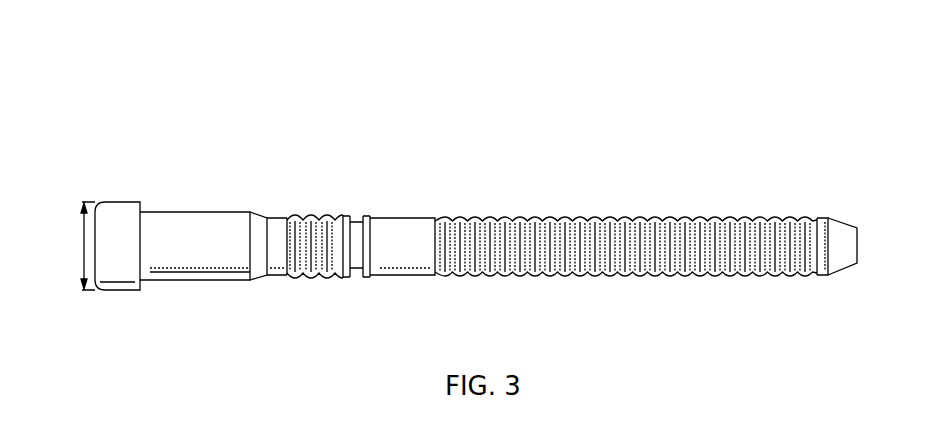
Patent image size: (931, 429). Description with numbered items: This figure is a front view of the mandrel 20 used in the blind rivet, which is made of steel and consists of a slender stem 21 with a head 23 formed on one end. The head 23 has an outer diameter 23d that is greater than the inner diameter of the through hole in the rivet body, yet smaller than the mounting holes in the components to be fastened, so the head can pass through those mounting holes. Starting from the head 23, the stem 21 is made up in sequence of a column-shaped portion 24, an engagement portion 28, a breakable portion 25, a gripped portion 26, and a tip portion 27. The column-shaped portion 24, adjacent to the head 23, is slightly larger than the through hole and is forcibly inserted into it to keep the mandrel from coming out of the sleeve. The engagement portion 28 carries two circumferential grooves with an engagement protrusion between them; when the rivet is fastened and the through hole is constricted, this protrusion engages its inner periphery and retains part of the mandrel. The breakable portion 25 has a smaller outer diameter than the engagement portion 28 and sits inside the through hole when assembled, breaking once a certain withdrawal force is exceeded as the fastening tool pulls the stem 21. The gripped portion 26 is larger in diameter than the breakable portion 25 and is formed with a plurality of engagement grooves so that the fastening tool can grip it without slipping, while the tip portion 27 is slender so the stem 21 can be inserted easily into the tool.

The mandrel 20 is at (554, 143).
The stem 21 is at (401, 204).
The head 23 is at (112, 202).
The outer diameter of the head 23d is at (80, 258).
The column-shaped portion 24 is at (185, 208).
The breakable portion 25 is at (357, 215).
The gripped portion 26 is at (697, 213).
The tip portion 27 is at (842, 222).
The engagement portion 28 is at (296, 213).